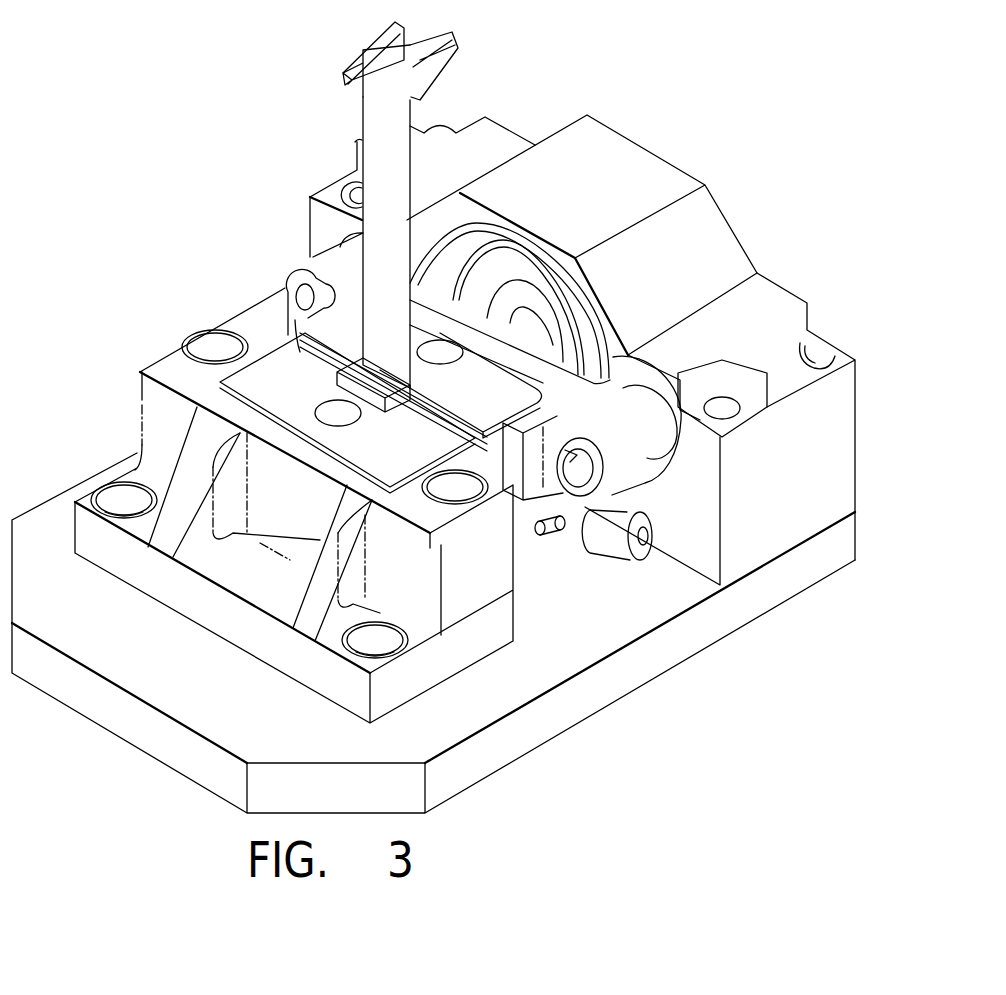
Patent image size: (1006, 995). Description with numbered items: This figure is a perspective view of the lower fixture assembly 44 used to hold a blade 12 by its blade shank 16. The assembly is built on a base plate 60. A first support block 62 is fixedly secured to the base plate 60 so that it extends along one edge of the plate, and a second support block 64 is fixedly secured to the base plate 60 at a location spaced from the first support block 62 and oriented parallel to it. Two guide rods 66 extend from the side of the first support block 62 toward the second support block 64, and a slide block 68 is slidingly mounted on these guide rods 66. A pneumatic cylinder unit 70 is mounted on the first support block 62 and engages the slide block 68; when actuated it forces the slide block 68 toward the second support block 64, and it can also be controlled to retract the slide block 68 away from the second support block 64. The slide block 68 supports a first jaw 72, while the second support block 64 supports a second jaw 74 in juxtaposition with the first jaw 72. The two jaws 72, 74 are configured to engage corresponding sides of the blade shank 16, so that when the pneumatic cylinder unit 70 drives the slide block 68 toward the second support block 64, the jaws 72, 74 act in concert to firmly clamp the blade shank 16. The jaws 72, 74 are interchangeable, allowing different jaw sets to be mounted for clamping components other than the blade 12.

The blade 12 is at (377, 123).
The blade shank 16 is at (343, 377).
The lower fixture assembly 44 is at (883, 392).
The base plate 60 is at (635, 675).
The first support block 62 is at (827, 453).
The second support block 64 is at (157, 362).
The guide rods 66 is at (290, 305).
The slide block 68 is at (630, 357).
The pneumatic cylinder unit 70 is at (500, 253).
The first jaw 72 is at (461, 385).
The second jaw 74 is at (347, 413).